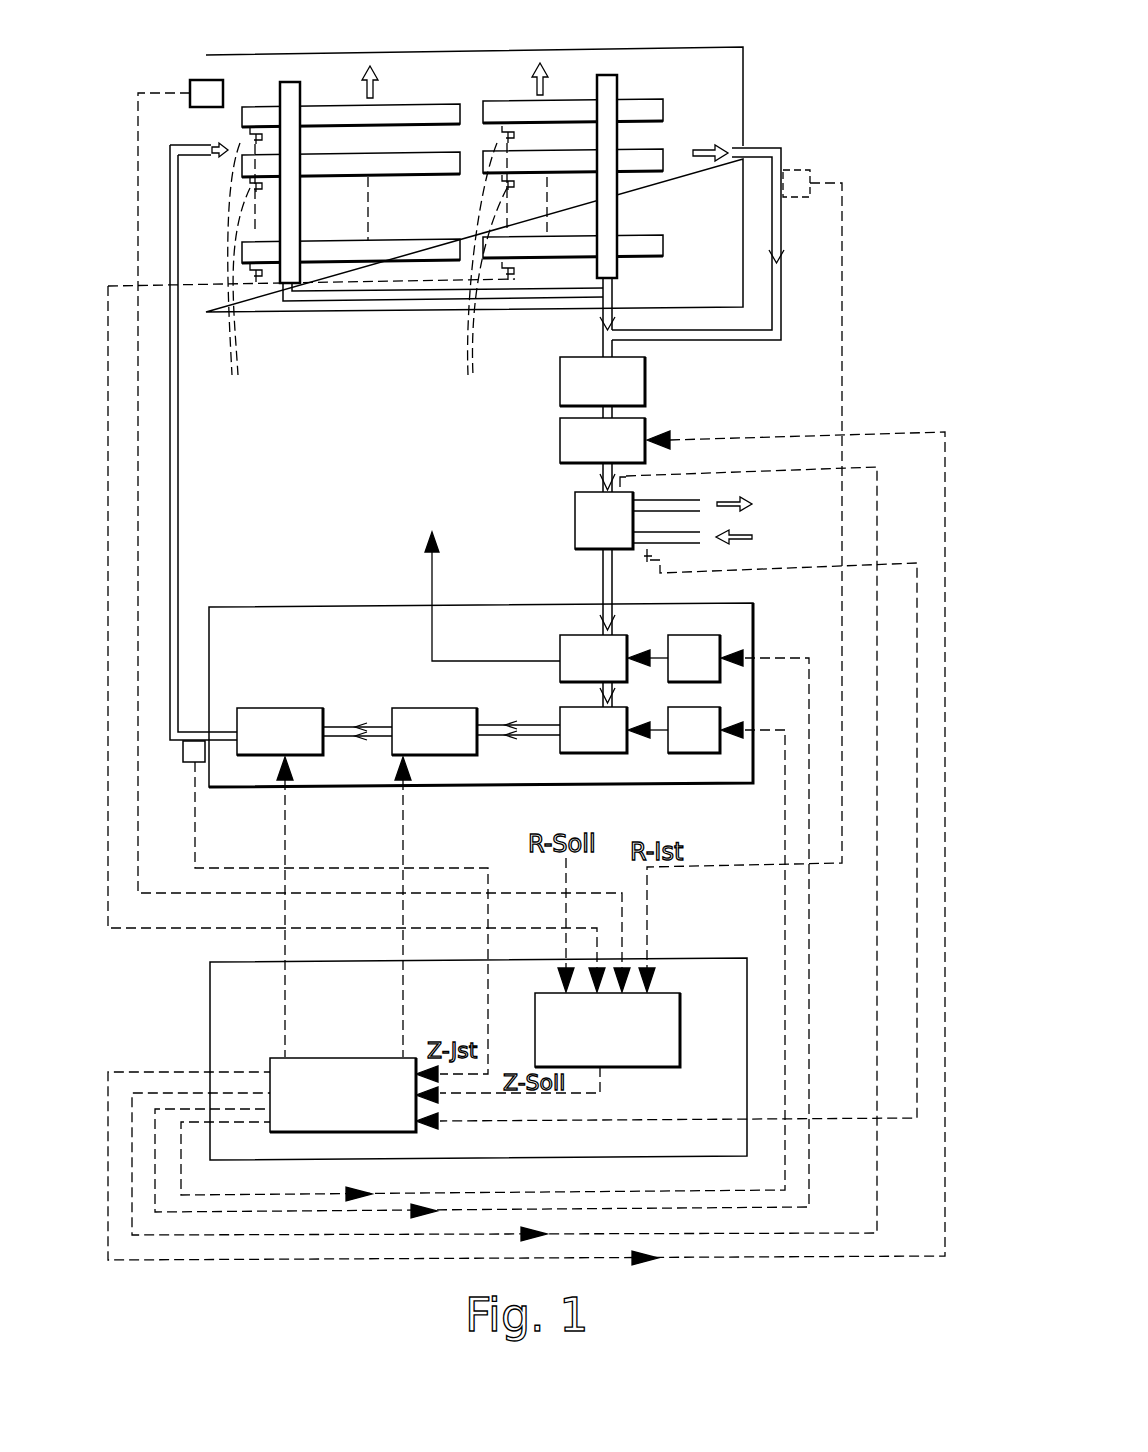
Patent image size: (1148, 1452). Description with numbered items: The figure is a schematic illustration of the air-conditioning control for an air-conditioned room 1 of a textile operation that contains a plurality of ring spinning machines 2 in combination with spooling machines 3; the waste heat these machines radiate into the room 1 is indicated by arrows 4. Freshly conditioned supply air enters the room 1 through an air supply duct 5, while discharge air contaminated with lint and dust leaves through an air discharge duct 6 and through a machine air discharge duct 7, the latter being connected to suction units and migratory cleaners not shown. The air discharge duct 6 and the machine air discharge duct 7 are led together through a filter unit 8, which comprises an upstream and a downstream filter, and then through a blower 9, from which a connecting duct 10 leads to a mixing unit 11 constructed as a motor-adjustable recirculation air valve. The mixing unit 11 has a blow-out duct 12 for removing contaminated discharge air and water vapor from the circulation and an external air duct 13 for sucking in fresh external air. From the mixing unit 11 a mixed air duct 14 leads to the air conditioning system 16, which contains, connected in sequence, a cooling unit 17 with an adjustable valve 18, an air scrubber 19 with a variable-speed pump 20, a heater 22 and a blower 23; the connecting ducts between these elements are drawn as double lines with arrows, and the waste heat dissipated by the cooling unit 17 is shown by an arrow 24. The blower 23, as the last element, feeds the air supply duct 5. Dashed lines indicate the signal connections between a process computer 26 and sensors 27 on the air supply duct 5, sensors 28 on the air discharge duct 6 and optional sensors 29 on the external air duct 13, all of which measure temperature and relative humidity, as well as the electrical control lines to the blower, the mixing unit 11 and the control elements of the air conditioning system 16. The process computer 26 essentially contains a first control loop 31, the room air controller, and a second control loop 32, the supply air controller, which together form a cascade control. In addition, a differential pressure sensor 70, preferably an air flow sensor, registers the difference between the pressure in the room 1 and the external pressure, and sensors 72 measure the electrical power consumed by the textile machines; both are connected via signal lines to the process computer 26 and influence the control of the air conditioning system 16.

The air-conditioned room 1 is at (705, 82).
The ring spinning machines 2 is at (418, 247).
The spooling machines 3 is at (585, 243).
The arrows 4 is at (365, 90).
The air supply duct 5 is at (168, 253).
The air discharge duct 6 is at (782, 300).
The machine air discharge duct 7 is at (393, 303).
The filter unit 8 is at (568, 383).
The blower 9 is at (568, 438).
The connecting duct 10 is at (598, 488).
The mixing unit 11 is at (575, 510).
The blow-out duct 12 is at (677, 500).
The external air duct 13 is at (678, 545).
The mixed air duct 14 is at (602, 590).
The air conditioning system 16 is at (327, 605).
The cooling unit 17 is at (585, 640).
The adjustable valve 18 is at (713, 648).
The air scrubber 19 is at (593, 737).
The variable-speed pump 20 is at (697, 737).
The heater 22 is at (445, 737).
The blower 23 is at (297, 740).
The arrow 24 is at (488, 580).
The process computer 26 is at (208, 975).
The sensors 27 is at (188, 750).
The sensors 28 is at (795, 172).
The sensors 29 is at (666, 839).
The first control loop 31 is at (660, 1005).
The second control loop 32 is at (282, 1072).
The differential pressure sensor 70 is at (198, 88).
The sensors 72 is at (232, 375).